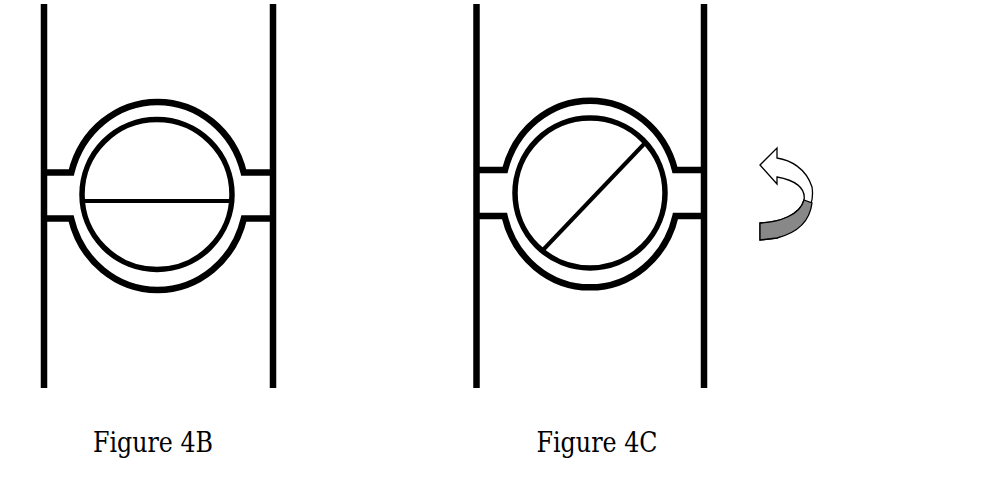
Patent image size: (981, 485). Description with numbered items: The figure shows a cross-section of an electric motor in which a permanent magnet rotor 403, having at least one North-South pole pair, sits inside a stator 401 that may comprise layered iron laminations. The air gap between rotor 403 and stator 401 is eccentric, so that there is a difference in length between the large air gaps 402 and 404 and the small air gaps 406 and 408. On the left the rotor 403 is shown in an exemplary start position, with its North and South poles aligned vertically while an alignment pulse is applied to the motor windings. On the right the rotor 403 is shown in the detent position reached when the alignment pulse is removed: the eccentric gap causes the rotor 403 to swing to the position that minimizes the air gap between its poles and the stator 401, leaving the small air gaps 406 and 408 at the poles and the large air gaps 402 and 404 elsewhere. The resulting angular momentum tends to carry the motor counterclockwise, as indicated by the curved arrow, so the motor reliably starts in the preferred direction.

In FIG. 4B, the stator 401 is at (158, 196).
In FIG. 4C, the stator 401 is at (591, 196).
In FIG. 4B, the rotor 403 is at (238, 188).
In FIG. 4C, the rotor 403 is at (510, 190).
In FIG. 4C, the large air gap 402 is at (510, 218).
In FIG. 4C, the large air gap 404 is at (667, 165).
In FIG. 4C, the small air gap 406 is at (513, 157).
In FIG. 4C, the small air gap 408 is at (665, 217).